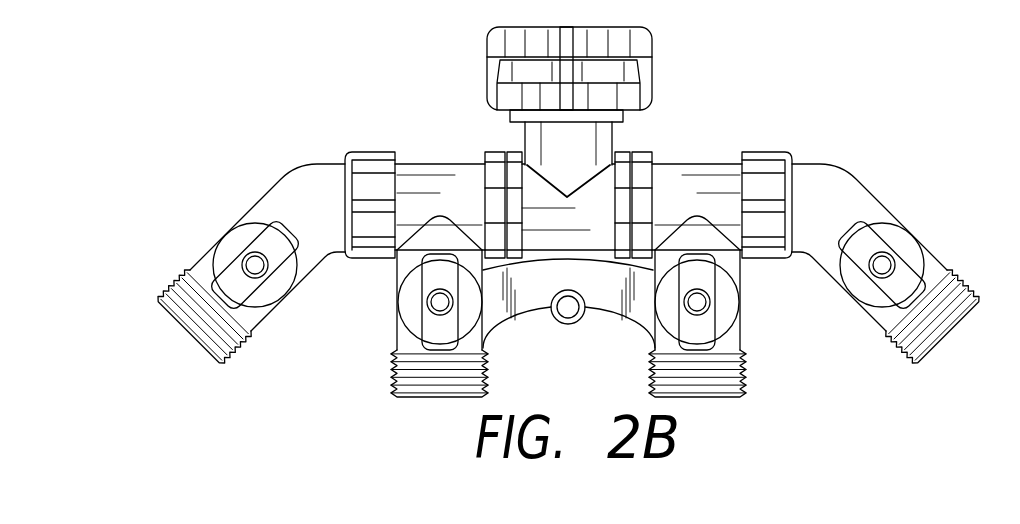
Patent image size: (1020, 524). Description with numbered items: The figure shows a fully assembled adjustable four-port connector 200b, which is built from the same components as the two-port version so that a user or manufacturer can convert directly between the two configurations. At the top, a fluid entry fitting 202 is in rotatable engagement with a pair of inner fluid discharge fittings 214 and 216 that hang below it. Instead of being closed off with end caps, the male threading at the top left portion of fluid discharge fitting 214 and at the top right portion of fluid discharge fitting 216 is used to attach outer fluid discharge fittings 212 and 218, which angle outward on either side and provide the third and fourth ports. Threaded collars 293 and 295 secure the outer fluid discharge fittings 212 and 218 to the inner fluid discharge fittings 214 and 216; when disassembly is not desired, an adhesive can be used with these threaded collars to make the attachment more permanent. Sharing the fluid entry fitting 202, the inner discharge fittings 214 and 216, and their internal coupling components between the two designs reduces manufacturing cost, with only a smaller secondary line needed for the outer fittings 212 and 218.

The four-port connector 200b is at (203, 73).
The fluid entry fitting 202 is at (650, 107).
The outer fluid discharge fitting 212 is at (308, 125).
The fluid discharge fitting 214 is at (495, 140).
The fluid discharge fitting 216 is at (743, 140).
The outer fluid discharge fitting 218 is at (996, 292).
The collar 293 is at (367, 150).
The collar 295 is at (767, 151).